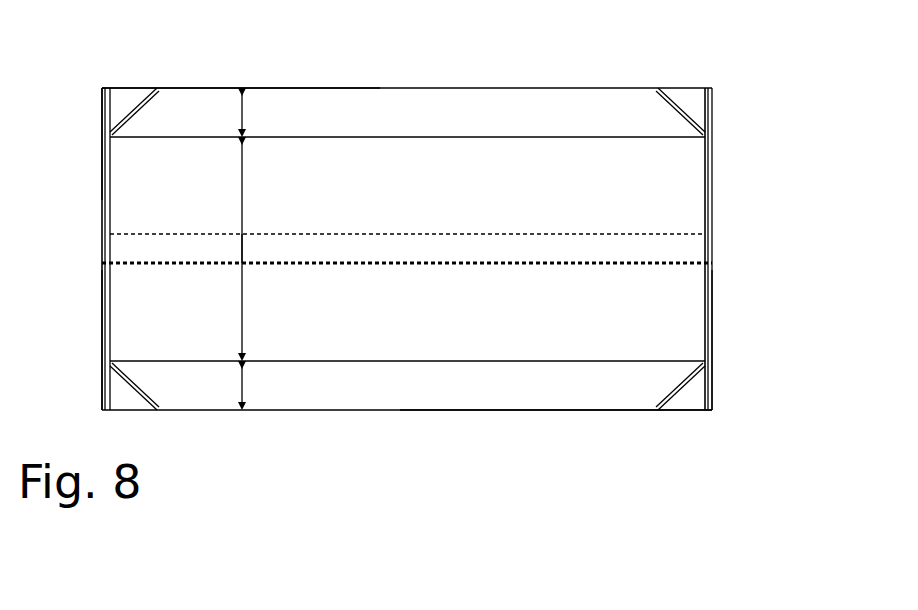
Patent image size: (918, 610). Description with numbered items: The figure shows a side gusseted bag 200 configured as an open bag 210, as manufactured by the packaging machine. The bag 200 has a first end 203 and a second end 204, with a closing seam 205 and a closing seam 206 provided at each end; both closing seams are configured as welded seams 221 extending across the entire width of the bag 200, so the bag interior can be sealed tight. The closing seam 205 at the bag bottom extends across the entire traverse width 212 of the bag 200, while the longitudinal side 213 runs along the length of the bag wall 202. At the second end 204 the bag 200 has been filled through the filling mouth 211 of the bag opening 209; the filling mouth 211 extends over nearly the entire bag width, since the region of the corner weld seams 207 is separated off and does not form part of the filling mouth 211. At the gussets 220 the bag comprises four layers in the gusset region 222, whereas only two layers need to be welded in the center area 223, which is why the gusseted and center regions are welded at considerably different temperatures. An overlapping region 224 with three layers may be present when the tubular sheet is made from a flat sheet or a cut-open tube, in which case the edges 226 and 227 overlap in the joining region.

The bag 200 is at (97, 52).
The open bag 210 is at (162, 52).
The longitudinal side 213 is at (508, 416).
The second end 204 is at (97, 240).
The bag opening 209 is at (97, 163).
The filling mouth 211 is at (93, 297).
The first end 203 is at (725, 236).
The traverse width 212 is at (716, 393).
The gusset 220 is at (340, 105).
The bag wall 202 is at (550, 160).
The weld seam 221 is at (113, 333).
The edge 226 is at (370, 234).
The edge 227 is at (370, 265).
The closing seam 206 is at (113, 220).
The closing seam 205 is at (700, 230).
The corner weld seam 207 is at (148, 388).
The gusset region 222 is at (250, 120).
The center area 223 is at (245, 198).
The overlapping region 224 is at (247, 248).